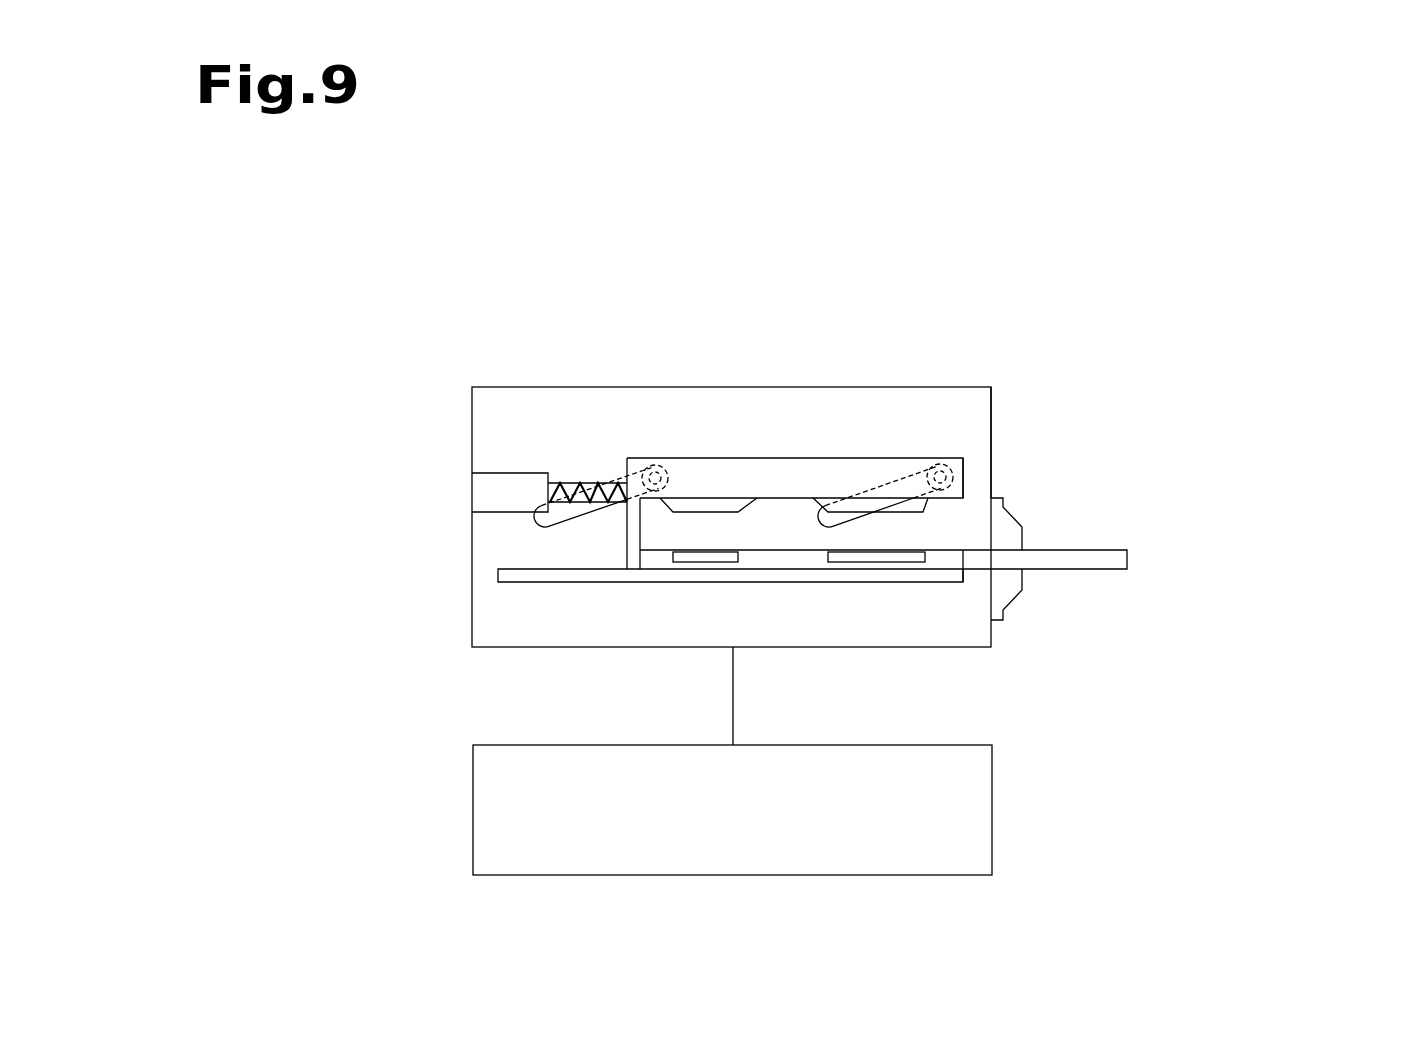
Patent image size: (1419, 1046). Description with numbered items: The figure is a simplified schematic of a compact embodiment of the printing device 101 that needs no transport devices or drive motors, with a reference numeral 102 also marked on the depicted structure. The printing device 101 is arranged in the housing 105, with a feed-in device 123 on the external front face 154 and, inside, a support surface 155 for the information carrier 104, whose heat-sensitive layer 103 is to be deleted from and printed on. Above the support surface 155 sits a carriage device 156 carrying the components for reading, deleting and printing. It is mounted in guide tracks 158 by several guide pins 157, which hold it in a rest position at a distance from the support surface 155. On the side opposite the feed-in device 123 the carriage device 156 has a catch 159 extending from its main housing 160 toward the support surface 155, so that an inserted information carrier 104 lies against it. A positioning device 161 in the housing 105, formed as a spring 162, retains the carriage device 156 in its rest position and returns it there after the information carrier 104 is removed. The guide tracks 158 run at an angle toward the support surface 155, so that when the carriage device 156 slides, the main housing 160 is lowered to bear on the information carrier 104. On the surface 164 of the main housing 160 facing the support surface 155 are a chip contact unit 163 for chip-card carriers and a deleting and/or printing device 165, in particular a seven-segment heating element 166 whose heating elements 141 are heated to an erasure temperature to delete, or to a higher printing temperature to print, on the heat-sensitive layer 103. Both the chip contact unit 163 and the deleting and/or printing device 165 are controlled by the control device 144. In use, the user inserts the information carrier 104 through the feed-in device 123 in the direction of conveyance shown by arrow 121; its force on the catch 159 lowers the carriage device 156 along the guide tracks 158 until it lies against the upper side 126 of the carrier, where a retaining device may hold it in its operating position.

The printing device 101 is at (1058, 326).
The housing 102 is at (392, 390).
The heat-sensitive layer 103 is at (888, 550).
The information carrier 104 is at (1114, 584).
The housing 105 is at (532, 614).
The arrow 121 is at (1320, 580).
The feed-in device 123 is at (1050, 512).
The upper side 126 is at (1097, 534).
The heating elements 141 is at (905, 561).
The control device 144 is at (752, 835).
The front face 154 is at (992, 456).
The support surface 155 is at (847, 575).
The carriage device 156 is at (808, 415).
The guide pins 157 is at (656, 465).
The guide tracks 158 is at (555, 518).
The catch 159 is at (632, 532).
The main housing 160 is at (778, 476).
The positioning device 161 is at (556, 430).
The spring 162 is at (584, 483).
The chip contact unit 163 is at (705, 500).
The surface 164 is at (767, 500).
The deleting and/or printing device 165 is at (945, 524).
The 7-segment heating element 166 is at (858, 495).